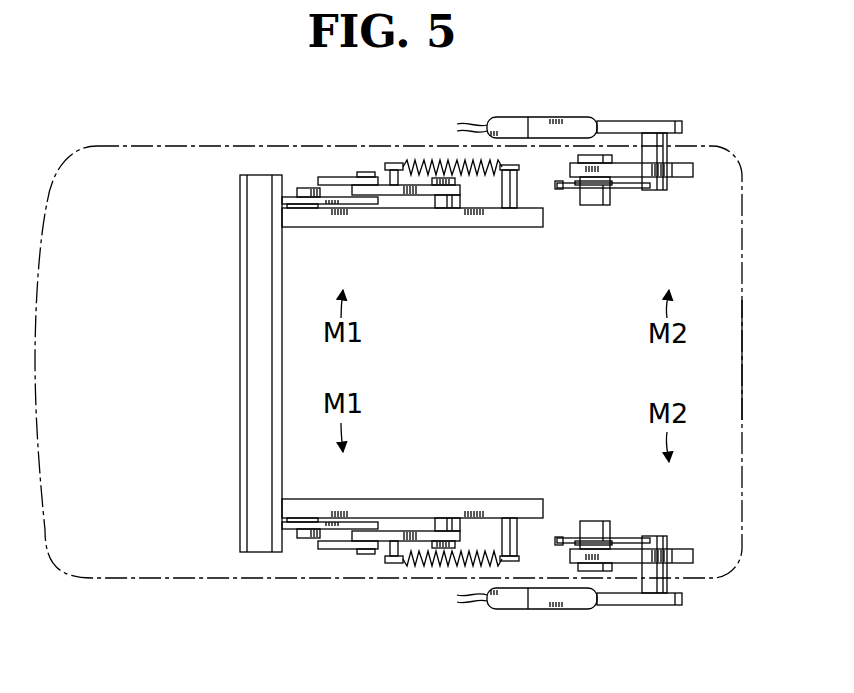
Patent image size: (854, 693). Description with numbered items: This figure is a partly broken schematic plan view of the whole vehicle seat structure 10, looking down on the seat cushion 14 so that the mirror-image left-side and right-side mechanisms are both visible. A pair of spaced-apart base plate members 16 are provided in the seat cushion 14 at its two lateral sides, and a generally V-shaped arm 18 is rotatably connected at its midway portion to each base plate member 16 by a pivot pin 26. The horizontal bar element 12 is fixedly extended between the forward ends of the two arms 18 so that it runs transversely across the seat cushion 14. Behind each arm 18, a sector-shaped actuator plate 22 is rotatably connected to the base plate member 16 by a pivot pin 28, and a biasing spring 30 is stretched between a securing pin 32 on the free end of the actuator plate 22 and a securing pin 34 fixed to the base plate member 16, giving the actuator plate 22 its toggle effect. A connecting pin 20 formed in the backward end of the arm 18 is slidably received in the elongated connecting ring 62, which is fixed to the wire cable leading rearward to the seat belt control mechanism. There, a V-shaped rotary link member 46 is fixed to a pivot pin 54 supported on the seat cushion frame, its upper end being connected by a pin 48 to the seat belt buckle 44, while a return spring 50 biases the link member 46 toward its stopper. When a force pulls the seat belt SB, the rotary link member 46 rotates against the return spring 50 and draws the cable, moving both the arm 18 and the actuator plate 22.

The vehicle seat structure 10 is at (203, 140).
The horizontal bar element 12 is at (250, 381).
The seat cushion 14 is at (747, 356).
The base plate member 16 is at (517, 220).
The arm 18 is at (293, 198).
The connecting pin 20 is at (363, 172).
The actuator plate 22 is at (393, 193).
The pivot pin 26 is at (309, 188).
The pivot pin 28 is at (442, 198).
The biasing spring 30 is at (437, 160).
The securing pin 32 is at (394, 163).
The securing pin 34 is at (507, 185).
The seat belt buckle 44 is at (540, 602).
The rotary link member 46 is at (667, 172).
The pin 48 is at (653, 153).
The return spring 50 is at (630, 186).
The pivot pin 54 is at (597, 197).
The elongated connecting ring 62 is at (338, 177).
The seat belt SB is at (470, 125).